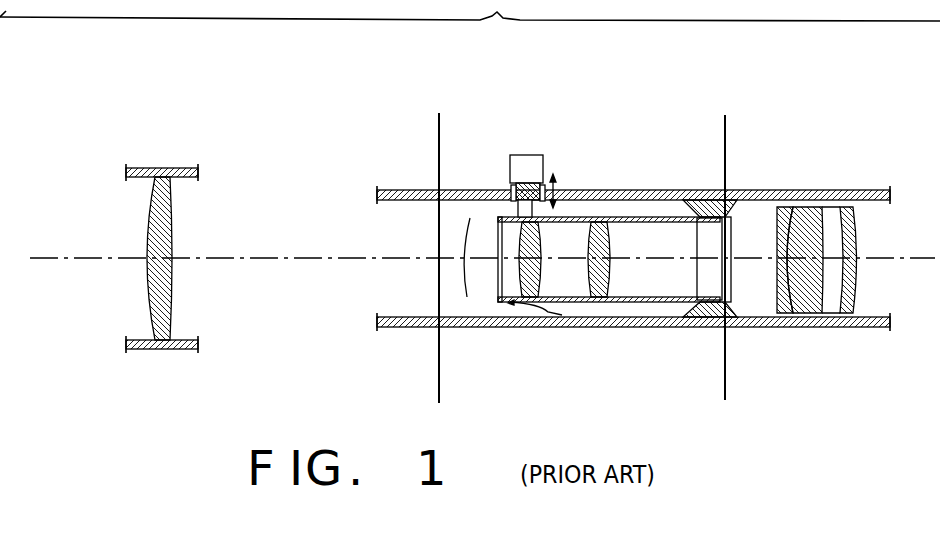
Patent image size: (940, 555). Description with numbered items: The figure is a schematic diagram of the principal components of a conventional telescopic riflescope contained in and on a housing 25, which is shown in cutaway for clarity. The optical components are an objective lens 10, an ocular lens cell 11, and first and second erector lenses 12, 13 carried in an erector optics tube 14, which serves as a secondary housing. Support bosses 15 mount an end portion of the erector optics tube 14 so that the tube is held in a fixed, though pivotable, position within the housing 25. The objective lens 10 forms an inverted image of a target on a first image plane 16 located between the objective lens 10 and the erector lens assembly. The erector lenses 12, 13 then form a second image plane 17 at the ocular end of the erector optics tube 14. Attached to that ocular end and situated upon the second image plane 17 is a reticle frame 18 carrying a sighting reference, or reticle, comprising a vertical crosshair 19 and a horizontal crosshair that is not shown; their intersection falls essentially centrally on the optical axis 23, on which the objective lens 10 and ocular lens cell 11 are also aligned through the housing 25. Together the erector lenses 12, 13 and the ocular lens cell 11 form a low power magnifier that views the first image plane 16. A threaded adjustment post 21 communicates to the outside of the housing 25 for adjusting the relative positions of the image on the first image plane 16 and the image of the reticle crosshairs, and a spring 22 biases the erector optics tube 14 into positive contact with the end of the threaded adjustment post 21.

The objective lens 10 is at (172, 231).
The ocular lens cell 11 is at (858, 232).
The first erector lens 12 is at (539, 240).
The second erector lens 13 is at (609, 240).
The erector optics tube 14 is at (575, 217).
The support bosses 15 is at (728, 308).
The first image plane 16 is at (438, 167).
The second image plane 17 is at (725, 152).
The reticle frame 18 is at (722, 270).
The vertical crosshair 19 is at (725, 282).
The threaded adjustment post 21 is at (543, 156).
The spring 22 is at (545, 306).
The optical axis 23 is at (235, 262).
The housing 25 is at (142, 168).